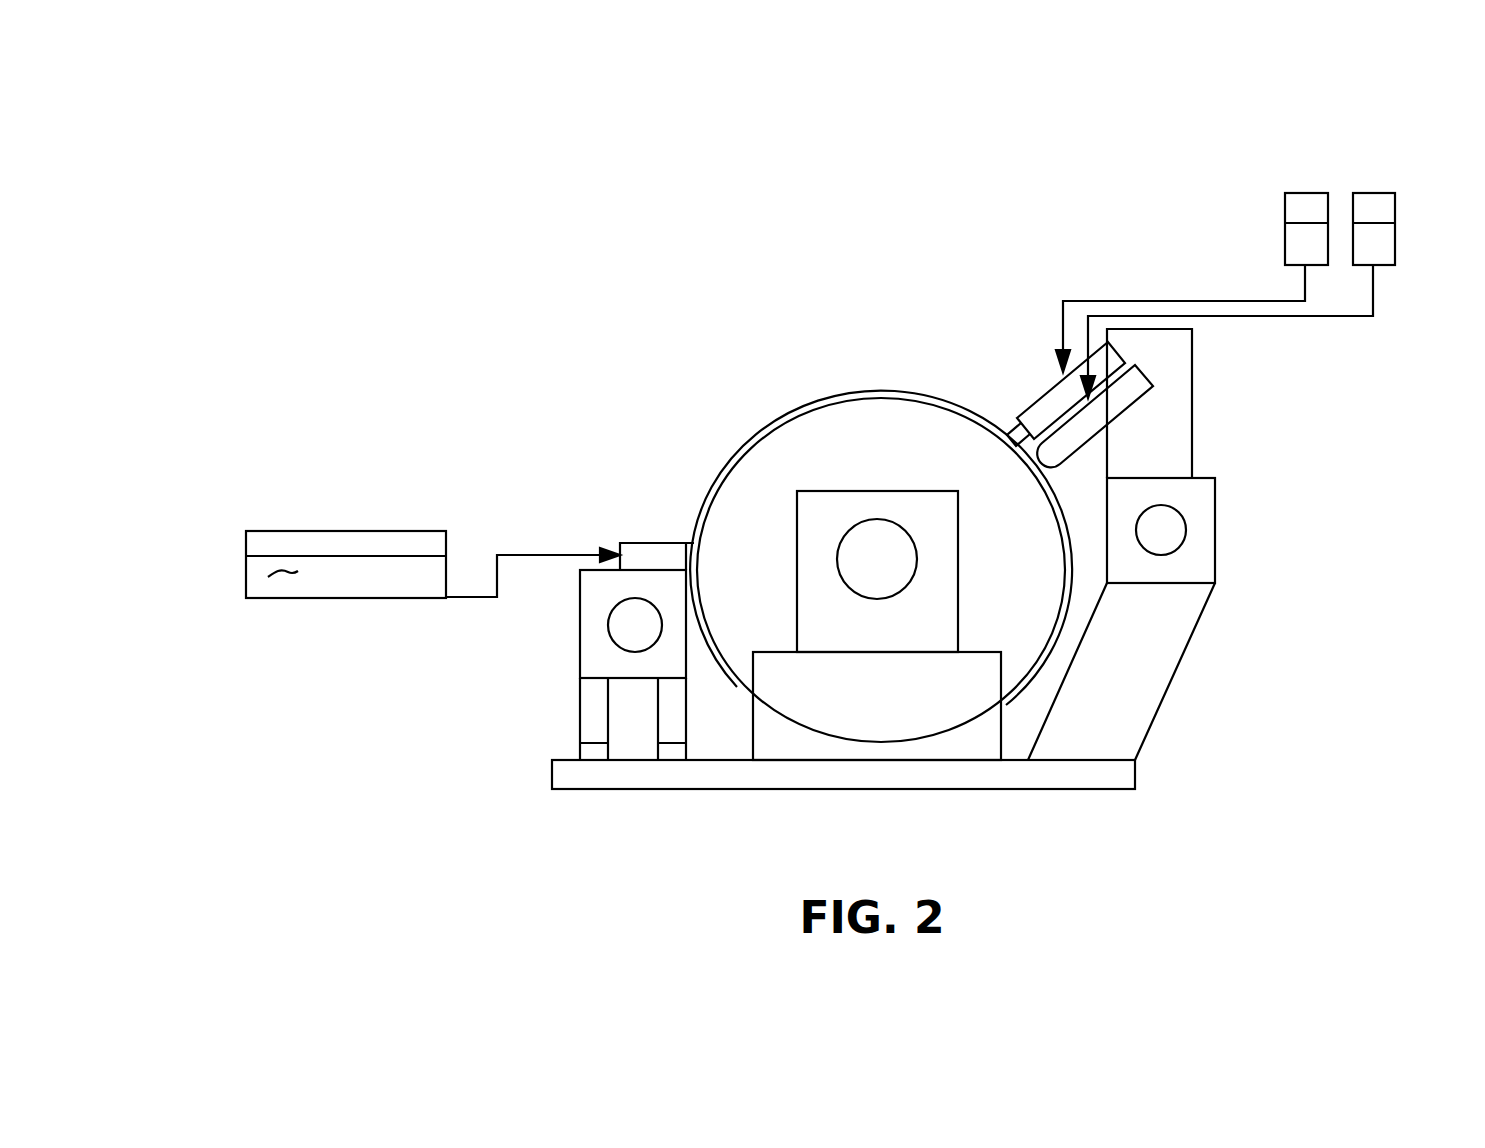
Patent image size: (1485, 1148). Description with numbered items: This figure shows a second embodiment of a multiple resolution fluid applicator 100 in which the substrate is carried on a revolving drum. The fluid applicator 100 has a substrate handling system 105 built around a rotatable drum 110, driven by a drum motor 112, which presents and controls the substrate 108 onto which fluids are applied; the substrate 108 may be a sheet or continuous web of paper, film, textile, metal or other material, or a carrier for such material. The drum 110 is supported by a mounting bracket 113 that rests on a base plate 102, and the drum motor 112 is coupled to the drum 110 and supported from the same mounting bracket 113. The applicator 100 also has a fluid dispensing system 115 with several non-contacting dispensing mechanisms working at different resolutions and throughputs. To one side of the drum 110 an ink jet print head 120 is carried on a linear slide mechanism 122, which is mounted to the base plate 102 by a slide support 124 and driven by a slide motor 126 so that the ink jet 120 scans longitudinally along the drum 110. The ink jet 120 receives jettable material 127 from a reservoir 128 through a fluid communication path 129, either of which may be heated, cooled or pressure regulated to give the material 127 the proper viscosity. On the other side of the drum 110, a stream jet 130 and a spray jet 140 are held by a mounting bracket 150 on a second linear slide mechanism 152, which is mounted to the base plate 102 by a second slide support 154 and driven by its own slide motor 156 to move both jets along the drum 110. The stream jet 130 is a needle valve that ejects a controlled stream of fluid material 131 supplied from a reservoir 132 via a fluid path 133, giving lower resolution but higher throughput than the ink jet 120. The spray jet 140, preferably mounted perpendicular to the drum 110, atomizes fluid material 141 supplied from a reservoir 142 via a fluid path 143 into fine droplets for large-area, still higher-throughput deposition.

The multiple resolution fluid applicator 100 is at (714, 234).
The base plate 102 is at (990, 792).
The substrate handling system 105 is at (786, 815).
The substrate 108 is at (879, 393).
The rotatable drum 110 is at (782, 450).
The drum motor 112 is at (853, 520).
The mounting bracket 113 is at (752, 720).
The fluid dispensing system 115 is at (550, 408).
The ink jet print head 120 is at (640, 543).
The linear slide mechanism 122 is at (580, 605).
The slide support 124 is at (580, 712).
The slide motor 126 is at (608, 633).
The jettable material 127 is at (290, 573).
The reservoir 128 is at (272, 531).
The fluid communication path 129 is at (514, 555).
The stream jet 130 is at (1038, 398).
The fluid material 131 is at (1300, 238).
The reservoir 132 is at (1303, 193).
The fluid path 133 is at (1140, 298).
The spray jet 140 is at (1140, 403).
The fluid material 141 is at (1388, 240).
The reservoir 142 is at (1375, 193).
The fluid path 143 is at (1313, 316).
The mounting bracket 150 is at (1192, 415).
The second linear slide mechanism 152 is at (1216, 567).
The second slide support 154 is at (1177, 672).
The slide motor 156 is at (1187, 530).